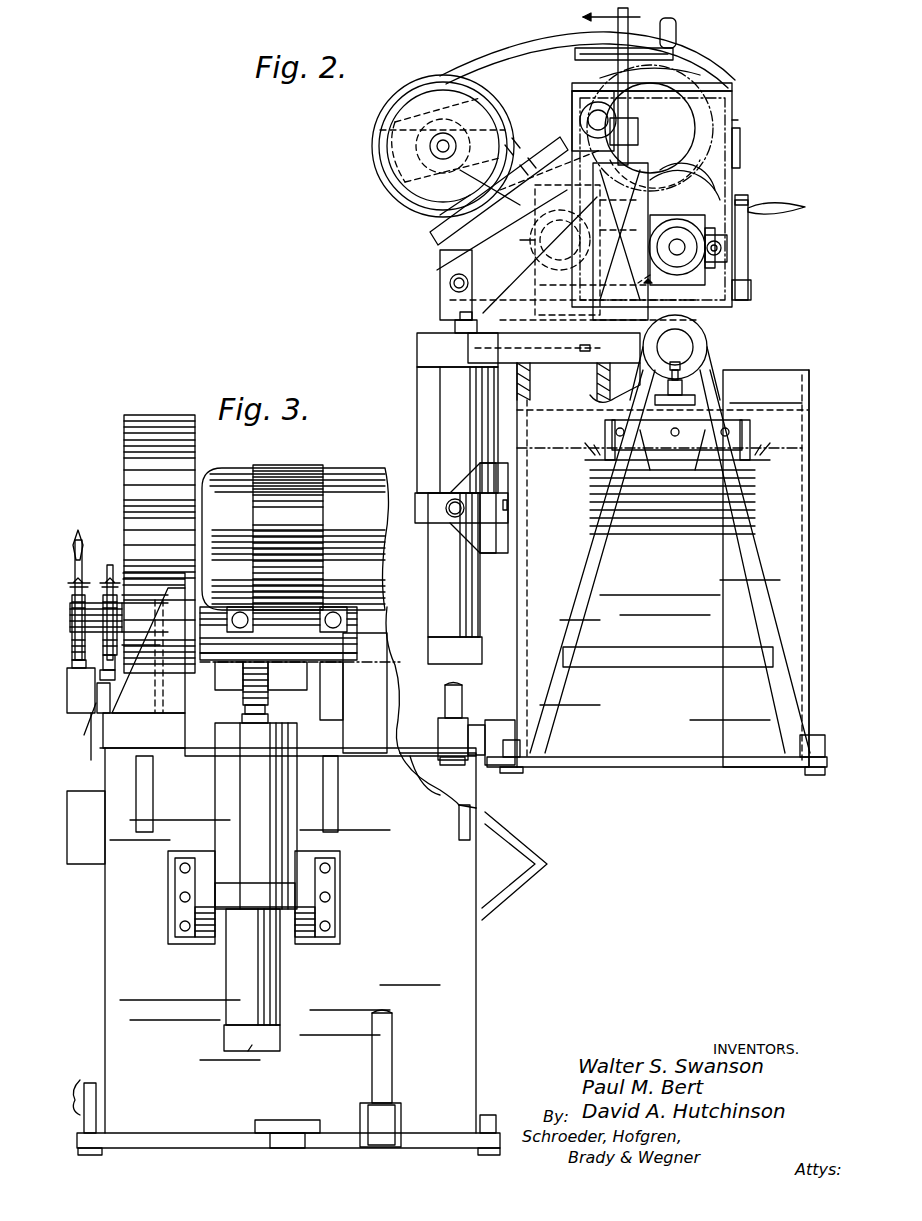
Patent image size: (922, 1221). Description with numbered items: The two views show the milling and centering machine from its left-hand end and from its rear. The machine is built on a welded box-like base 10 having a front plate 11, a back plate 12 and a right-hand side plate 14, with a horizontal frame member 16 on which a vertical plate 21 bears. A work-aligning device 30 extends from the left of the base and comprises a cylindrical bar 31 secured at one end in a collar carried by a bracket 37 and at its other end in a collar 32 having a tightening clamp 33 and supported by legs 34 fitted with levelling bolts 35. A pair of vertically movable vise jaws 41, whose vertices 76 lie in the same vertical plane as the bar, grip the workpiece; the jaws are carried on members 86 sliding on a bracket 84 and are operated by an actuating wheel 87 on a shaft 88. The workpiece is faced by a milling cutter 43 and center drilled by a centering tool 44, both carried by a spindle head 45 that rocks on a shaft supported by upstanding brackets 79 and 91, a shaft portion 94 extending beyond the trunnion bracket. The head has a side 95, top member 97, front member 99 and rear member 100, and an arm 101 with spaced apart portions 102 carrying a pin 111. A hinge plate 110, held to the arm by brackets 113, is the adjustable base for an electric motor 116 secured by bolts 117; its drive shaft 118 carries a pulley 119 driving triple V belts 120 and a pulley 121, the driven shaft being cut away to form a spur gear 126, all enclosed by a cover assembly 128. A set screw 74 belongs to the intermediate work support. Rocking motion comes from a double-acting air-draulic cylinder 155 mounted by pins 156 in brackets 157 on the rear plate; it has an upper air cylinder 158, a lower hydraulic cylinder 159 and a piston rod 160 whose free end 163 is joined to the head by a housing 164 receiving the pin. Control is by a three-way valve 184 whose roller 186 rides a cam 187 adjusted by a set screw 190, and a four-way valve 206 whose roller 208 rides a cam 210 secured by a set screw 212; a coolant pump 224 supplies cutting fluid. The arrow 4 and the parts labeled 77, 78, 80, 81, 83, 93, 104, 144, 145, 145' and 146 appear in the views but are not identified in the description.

In FIG. 2, the direction arrow 4 is at (611, 85).
In FIG. 2, the base 10 is at (810, 566).
In FIG. 3, the base 10 is at (485, 1017).
In FIG. 2, the front plate 11 is at (805, 492).
In FIG. 3, the front plate 11 is at (478, 997).
In FIG. 2, the back plate 12 is at (530, 685).
In FIG. 3, the back plate 12 is at (458, 935).
In FIG. 3, the right hand side plate 14 is at (100, 870).
In FIG. 2, the horizontal frame member 16 is at (800, 440).
In FIG. 2, the vertical plate 21 is at (580, 410).
In FIG. 2, the work-aligning device 30 is at (578, 538).
In FIG. 2, the cylindrical bar 31 is at (690, 343).
In FIG. 2, the collar 32 is at (708, 352).
In FIG. 2, the tightening clamp 33 is at (685, 398).
In FIG. 2, the legs 34 is at (755, 608).
In FIG. 2, the levelling bolts 35 is at (510, 745).
In FIG. 3, the levelling bolts 35 is at (88, 1122).
In FIG. 2, the bracket 37 is at (705, 340).
In FIG. 3, the bracket 37 is at (505, 838).
In FIG. 2, the vise jaws 41 is at (720, 202).
In FIG. 2, the milling cutter 43 is at (712, 150).
In FIG. 2, the centering tool 44 is at (735, 240).
In FIG. 2, the spindle head 45 is at (736, 86).
In FIG. 3, the spindle head 45 is at (305, 462).
In FIG. 2, the set screw 74 is at (513, 225).
In FIG. 2, the vertices 76 is at (577, 250).
In FIG. 2, the column 77 is at (620, 241).
In FIG. 2, the support bar 78 is at (590, 305).
In FIG. 3, the upstanding bracket 79 is at (330, 697).
In FIG. 2, the top plate 80 is at (554, 348).
In FIG. 3, the top plate 80 is at (415, 720).
In FIG. 2, the casting 81 is at (560, 372).
In FIG. 3, the casting 81 is at (403, 722).
In FIG. 2, the shaft 83 is at (595, 278).
In FIG. 2, the bracket 84 is at (620, 214).
In FIG. 2, the members 86 is at (682, 195).
In FIG. 2, the actuating wheel 87 is at (625, 35).
In FIG. 2, the shaft 88 is at (655, 74).
In FIG. 3, the trunnion bracket 91 is at (148, 643).
In FIG. 3, the slide base 93 is at (145, 728).
In FIG. 3, the shaft portion 94 is at (92, 620).
In FIG. 2, the side 95 is at (716, 112).
In FIG. 2, the top member 97 is at (700, 88).
In FIG. 2, the front member 99 is at (736, 126).
In FIG. 2, the rear member 100 is at (580, 105).
In FIG. 2, the arm 101 is at (460, 305).
In FIG. 3, the spaced apart portions 102 is at (230, 676).
In FIG. 3, the spacer block 104 is at (261, 683).
In FIG. 2, the plate 110 is at (440, 262).
In FIG. 3, the plate 110 is at (368, 628).
In FIG. 2, the pin 111 is at (455, 287).
In FIG. 2, the brackets 113 is at (450, 280).
In FIG. 3, the brackets 113 is at (325, 670).
In FIG. 2, the electric motor 116 is at (440, 92).
In FIG. 3, the electric motor 116 is at (356, 478).
In FIG. 2, the bolts 117 is at (460, 190).
In FIG. 3, the bolts 117 is at (335, 607).
In FIG. 2, the drive shaft 118 is at (432, 147).
In FIG. 3, the drive shaft 118 is at (203, 527).
In FIG. 2, the pulley 119 is at (392, 130).
In FIG. 2, the triple V belts 120 is at (520, 80).
In FIG. 2, the pulley 121 is at (455, 134).
In FIG. 2, the spur gear 126 is at (432, 80).
In FIG. 2, the cover assembly 128 is at (520, 50).
In FIG. 3, the cover assembly 128 is at (160, 422).
In FIG. 2, the handle arm 144 is at (748, 296).
In FIG. 2, the handle 145 is at (799, 213).
In FIG. 2, the handle pivot 145' is at (781, 188).
In FIG. 2, the pivot bearing 146 is at (727, 250).
In FIG. 2, the air-draulic cylinder 155 is at (412, 406).
In FIG. 3, the air-draulic cylinder 155 is at (208, 953).
In FIG. 2, the pins 156 is at (465, 513).
In FIG. 2, the brackets 157 is at (482, 486).
In FIG. 3, the brackets 157 is at (200, 876).
In FIG. 2, the air cylinder 158 is at (425, 359).
In FIG. 3, the air cylinder 158 is at (228, 795).
In FIG. 3, the hydraulic cylinder 159 is at (245, 1045).
In FIG. 2, the piston rod 160 is at (430, 325).
In FIG. 3, the piston rod 160 is at (201, 730).
In FIG. 3, the free end 163 is at (258, 722).
In FIG. 2, the housing 164 is at (478, 330).
In FIG. 3, the two-position three-way valve 184 is at (82, 731).
In FIG. 3, the roller 186 is at (112, 665).
In FIG. 3, the cam 187 is at (120, 598).
In FIG. 3, the set screw 190 is at (111, 580).
In FIG. 3, the two-position four-way valve 206 is at (84, 686).
In FIG. 3, the roller 208 is at (100, 664).
In FIG. 3, the cam 210 is at (80, 578).
In FIG. 3, the set screw 212 is at (88, 537).
In FIG. 3, the coolant pump 224 is at (82, 1082).